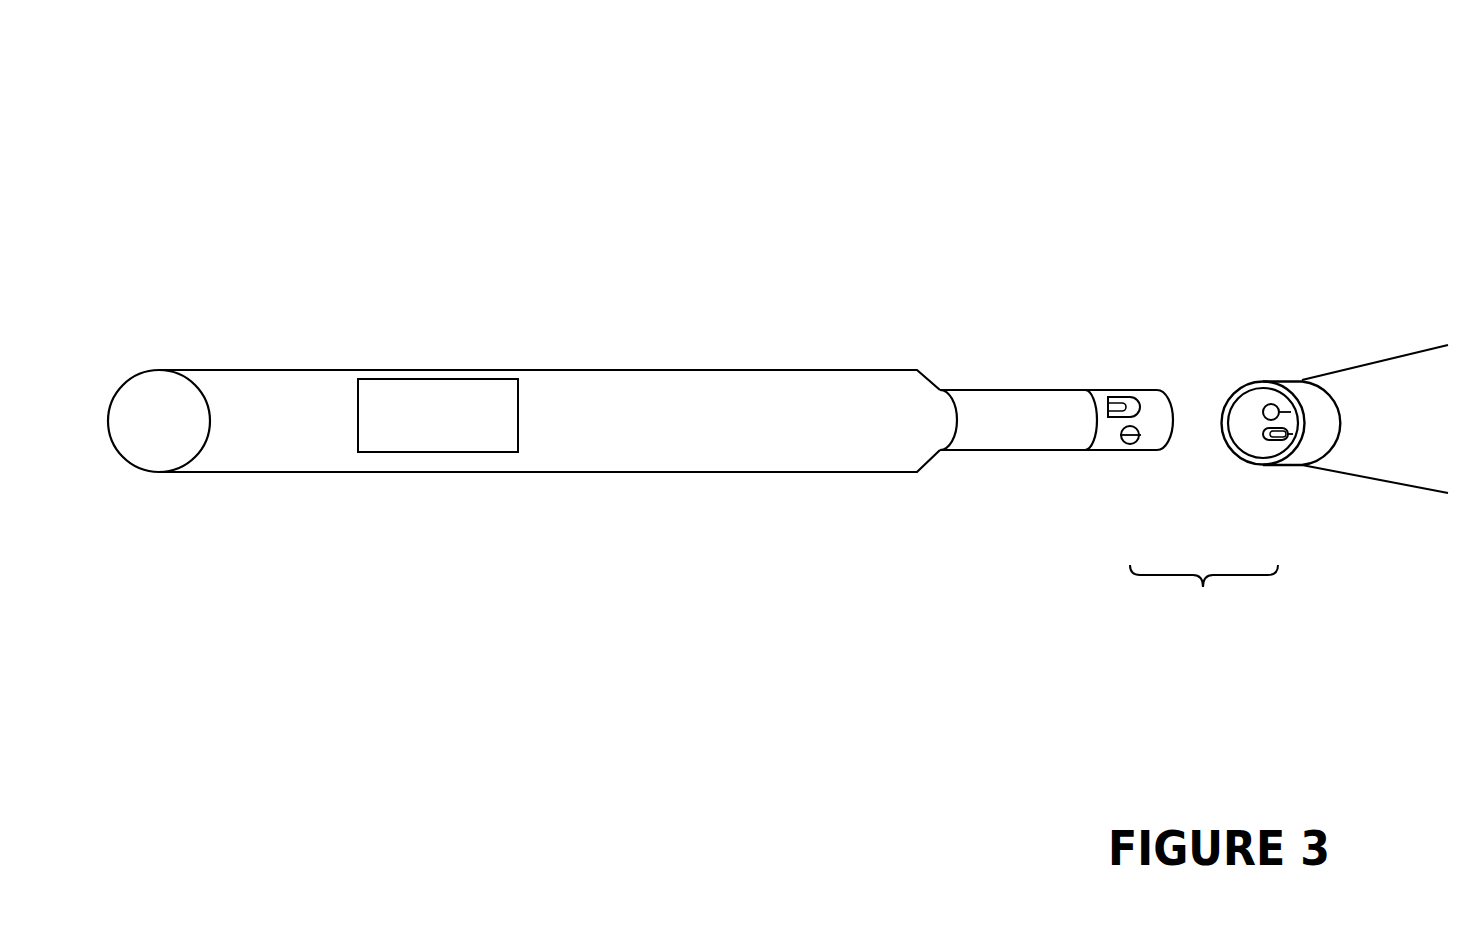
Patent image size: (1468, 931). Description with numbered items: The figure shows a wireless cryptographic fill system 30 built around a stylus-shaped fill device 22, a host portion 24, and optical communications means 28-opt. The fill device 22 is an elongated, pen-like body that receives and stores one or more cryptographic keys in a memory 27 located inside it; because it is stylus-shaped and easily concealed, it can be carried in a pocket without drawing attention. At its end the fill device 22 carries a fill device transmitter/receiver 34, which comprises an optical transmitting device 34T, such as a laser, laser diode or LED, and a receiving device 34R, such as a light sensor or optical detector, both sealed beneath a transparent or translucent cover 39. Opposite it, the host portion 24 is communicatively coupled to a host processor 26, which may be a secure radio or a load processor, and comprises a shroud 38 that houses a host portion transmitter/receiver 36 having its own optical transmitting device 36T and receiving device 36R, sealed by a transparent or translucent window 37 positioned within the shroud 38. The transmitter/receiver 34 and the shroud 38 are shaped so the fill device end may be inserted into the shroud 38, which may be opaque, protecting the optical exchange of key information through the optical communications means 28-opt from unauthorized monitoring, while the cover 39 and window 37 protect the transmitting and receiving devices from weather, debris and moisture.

The wireless cryptographic fill system 30 is at (698, 85).
The fill device 22 is at (400, 330).
The memory 27 is at (468, 440).
The fill device transmitter/receiver 34 is at (1128, 377).
The cover 39 is at (1153, 448).
The optical transmitting device 34T is at (1110, 403).
The receiving device 34R is at (1128, 443).
The shroud 38 is at (1225, 417).
The host portion 24 is at (1327, 365).
The host portion transmitter/receiver 36 is at (1252, 413).
The receiving device 36R is at (1268, 410).
The optical transmitting device 36T is at (1287, 440).
The window 37 is at (1252, 430).
The host processor 26 is at (1375, 419).
The optical communications means 28-opt is at (1204, 603).